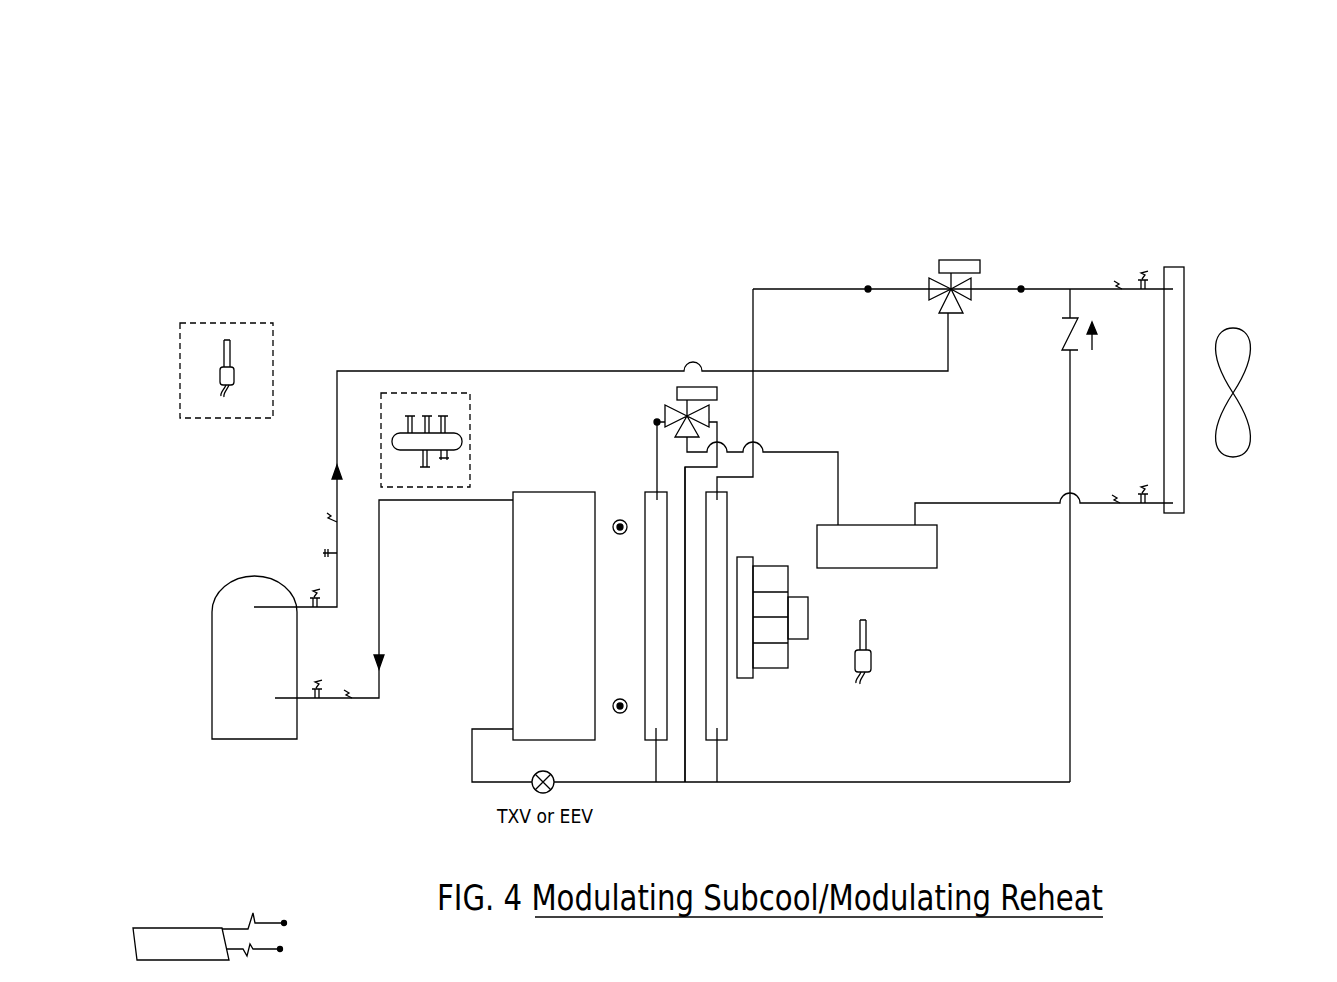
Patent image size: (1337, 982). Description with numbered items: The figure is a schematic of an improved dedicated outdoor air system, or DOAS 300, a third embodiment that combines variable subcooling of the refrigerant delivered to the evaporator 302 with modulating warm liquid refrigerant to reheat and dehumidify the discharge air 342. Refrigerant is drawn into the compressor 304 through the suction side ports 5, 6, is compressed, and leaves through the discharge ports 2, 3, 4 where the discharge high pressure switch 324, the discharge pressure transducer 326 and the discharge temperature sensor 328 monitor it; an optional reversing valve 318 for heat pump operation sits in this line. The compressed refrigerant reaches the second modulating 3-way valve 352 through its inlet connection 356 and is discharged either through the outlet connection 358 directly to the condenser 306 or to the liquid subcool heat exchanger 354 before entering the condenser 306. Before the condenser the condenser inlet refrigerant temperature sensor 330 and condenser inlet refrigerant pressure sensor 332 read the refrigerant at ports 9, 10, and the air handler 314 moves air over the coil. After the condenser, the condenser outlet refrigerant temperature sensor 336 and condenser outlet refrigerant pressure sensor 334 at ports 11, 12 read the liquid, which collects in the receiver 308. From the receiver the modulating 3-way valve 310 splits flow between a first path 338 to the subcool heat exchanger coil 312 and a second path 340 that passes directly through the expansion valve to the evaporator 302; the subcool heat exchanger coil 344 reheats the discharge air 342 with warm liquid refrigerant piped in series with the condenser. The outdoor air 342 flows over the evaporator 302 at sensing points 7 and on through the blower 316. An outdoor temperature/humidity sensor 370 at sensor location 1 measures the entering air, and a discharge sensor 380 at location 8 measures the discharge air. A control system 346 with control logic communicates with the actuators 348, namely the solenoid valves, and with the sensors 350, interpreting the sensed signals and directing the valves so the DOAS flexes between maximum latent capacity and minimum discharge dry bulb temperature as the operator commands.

The DOAS 300 is at (236, 78).
The evaporator 302 is at (525, 684).
The compressor 304 is at (235, 686).
The condenser 306 is at (1178, 313).
The receiver 308 is at (937, 568).
The modulating 3-way valve 310 is at (727, 394).
The heat exchanger coil (HEC) 312 is at (655, 712).
The air handler 314 is at (1248, 386).
The blower 316 is at (775, 673).
The optional reversing valve 318 is at (468, 397).
The discharge high pressure switch 324 is at (260, 580).
The discharge pressure transducer 326 is at (276, 542).
The discharge temperature sensor 328 is at (285, 505).
The condenser inlet refrigerant temperature sensor 330 is at (1102, 251).
The condenser inlet refrigerant pressure sensor 332 is at (1153, 243).
The condenser outlet refrigerant pressure sensor 334 is at (1178, 492).
The condenser outlet refrigerant temperature sensor 336 is at (1110, 509).
The first path 338 is at (654, 423).
The second path 340 is at (714, 423).
The discharge air 342 is at (253, 316).
The subcool heat exchanger coil 344 is at (632, 781).
The control system 346 is at (181, 930).
The actuators 348 is at (272, 915).
The sensors 350 is at (274, 950).
The second modulating 3-way valve 352 is at (920, 259).
The liquid subcool heat exchanger 354 is at (720, 712).
The second valve inlet connection 356 is at (868, 292).
The second valve outlet connection 358 is at (1021, 292).
The outdoor temperature/humidity sensor 370 is at (211, 388).
The discharge sensor 380 is at (891, 669).
The sensor location 1 is at (209, 360).
The port 2 is at (307, 590).
The port 3 is at (318, 551).
The port 4 is at (292, 503).
The port 5 is at (319, 674).
The port 6 is at (352, 678).
The sensor location 7 is at (632, 779).
The sensor location 8 is at (893, 700).
The port 9 is at (1103, 240).
The port 10 is at (1148, 222).
The port 11 is at (1120, 487).
The port 12 is at (1175, 522).